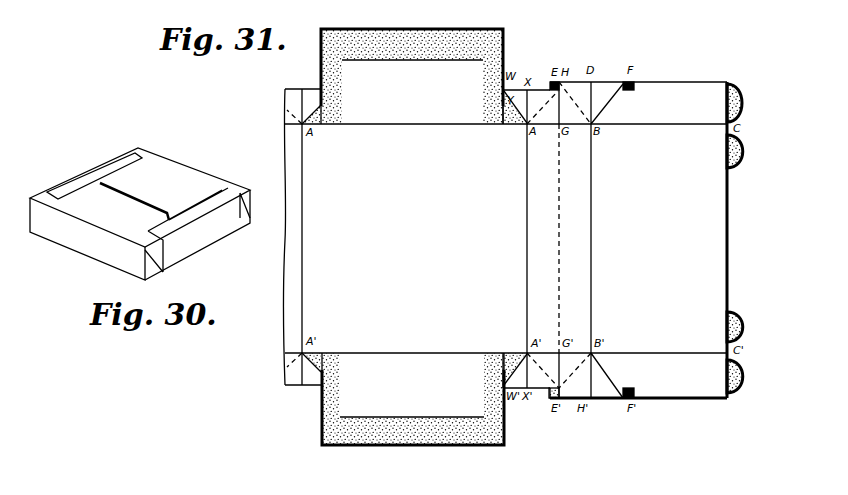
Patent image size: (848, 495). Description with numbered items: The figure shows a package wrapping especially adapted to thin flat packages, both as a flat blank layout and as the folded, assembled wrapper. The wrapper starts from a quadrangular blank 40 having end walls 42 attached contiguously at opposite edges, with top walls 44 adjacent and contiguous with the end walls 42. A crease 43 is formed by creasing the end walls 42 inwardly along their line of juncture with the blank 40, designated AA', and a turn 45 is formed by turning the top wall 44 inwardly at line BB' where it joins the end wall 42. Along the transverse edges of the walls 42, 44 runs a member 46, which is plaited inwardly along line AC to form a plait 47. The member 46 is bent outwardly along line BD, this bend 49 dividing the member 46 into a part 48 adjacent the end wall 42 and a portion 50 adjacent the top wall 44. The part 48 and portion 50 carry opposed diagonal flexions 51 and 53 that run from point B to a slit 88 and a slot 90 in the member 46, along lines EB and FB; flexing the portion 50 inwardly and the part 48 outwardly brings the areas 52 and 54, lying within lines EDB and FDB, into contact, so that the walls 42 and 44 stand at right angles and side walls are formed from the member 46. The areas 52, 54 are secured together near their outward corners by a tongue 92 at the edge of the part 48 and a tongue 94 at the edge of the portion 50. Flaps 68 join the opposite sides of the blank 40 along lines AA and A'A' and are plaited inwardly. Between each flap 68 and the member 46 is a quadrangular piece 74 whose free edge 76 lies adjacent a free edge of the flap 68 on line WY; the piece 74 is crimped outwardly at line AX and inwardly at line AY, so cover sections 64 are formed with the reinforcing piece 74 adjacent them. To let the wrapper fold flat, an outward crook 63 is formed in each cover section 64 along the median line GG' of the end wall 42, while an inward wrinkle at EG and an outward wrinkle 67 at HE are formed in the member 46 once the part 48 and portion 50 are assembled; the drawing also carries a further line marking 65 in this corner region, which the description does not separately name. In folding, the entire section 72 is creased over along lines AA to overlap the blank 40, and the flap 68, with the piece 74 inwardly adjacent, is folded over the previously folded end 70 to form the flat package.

In FIG. 31, the quadrangular blank 40 is at (506, 238).
In FIG. 31, the end wall 42 is at (546, 238).
In FIG. 30, the end wall 42 is at (87, 239).
In FIG. 31, the crease 43 is at (526, 248).
In FIG. 30, the crease 43 is at (86, 258).
In FIG. 31, the top wall 44 is at (663, 250).
In FIG. 30, the top wall 44 is at (140, 197).
In FIG. 30, the turn 45 is at (50, 212).
In FIG. 31, the member 46 is at (680, 99).
In FIG. 31, the plait 47 is at (675, 127).
In FIG. 31, the part 48 is at (547, 239).
In FIG. 31, the bend 49 is at (601, 102).
In FIG. 31, the portion 50 is at (718, 85).
In FIG. 31, the diagonal flexion 51 is at (581, 118).
In FIG. 31, the area 52 is at (638, 240).
In FIG. 31, the diagonal flexion 53 is at (617, 100).
In FIG. 31, the area 54 is at (612, 239).
In FIG. 31, the outward crook 63 is at (574, 218).
In FIG. 30, the cover section 64 is at (214, 183).
In FIG. 31, the fold line 65 is at (551, 113).
In FIG. 31, the outward wrinkle 67 is at (571, 81).
In FIG. 31, the flap 68 is at (403, 237).
In FIG. 30, the flap 68 is at (94, 172).
In FIG. 31, the folded end 70 is at (452, 38).
In FIG. 31, the section 72 is at (742, 150).
In FIG. 31, the quadrangular piece 74 is at (515, 239).
In FIG. 31, the free edge 76 is at (517, 82).
In FIG. 31, the slit 88 is at (552, 82).
In FIG. 31, the slot 90 is at (630, 82).
In FIG. 31, the tongue 92 is at (563, 75).
In FIG. 31, the tongue 94 is at (640, 86).